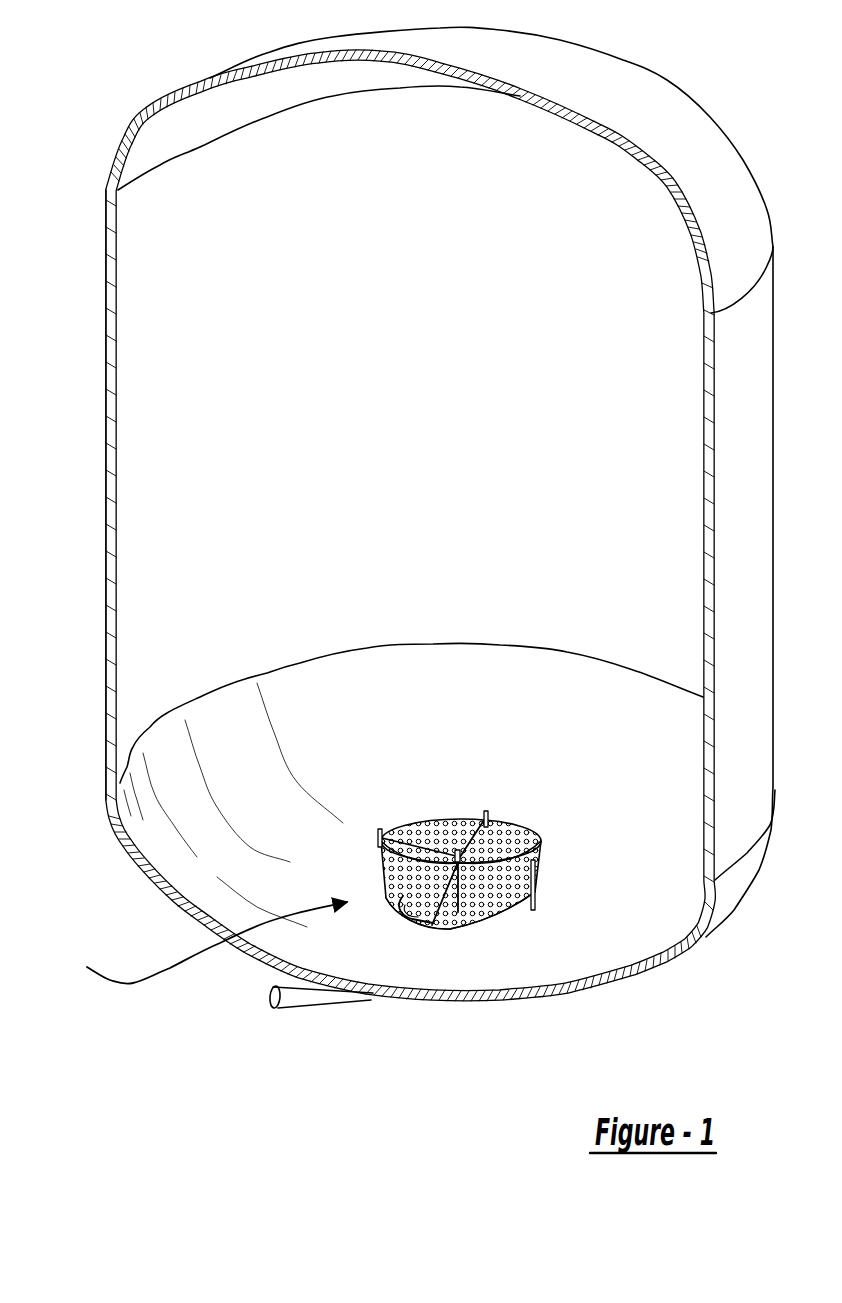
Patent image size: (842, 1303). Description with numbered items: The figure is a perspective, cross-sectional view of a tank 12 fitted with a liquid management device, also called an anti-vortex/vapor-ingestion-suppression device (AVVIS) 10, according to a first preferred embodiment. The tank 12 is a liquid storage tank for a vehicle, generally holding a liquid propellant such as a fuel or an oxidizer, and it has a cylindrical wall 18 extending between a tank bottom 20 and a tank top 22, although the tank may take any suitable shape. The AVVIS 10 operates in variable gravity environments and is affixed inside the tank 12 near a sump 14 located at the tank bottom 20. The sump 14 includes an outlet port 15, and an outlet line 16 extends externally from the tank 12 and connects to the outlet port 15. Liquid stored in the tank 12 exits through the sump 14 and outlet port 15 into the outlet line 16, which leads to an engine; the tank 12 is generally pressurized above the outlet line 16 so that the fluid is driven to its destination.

The liquid management device 10 is at (204, 943).
The tank 12 is at (104, 330).
The sump 14 is at (485, 927).
The outlet port 15 is at (462, 917).
The outlet line 16 is at (308, 997).
The cylindrical wall 18 is at (106, 405).
The tank bottom 20 is at (193, 833).
The tank top 22 is at (177, 113).